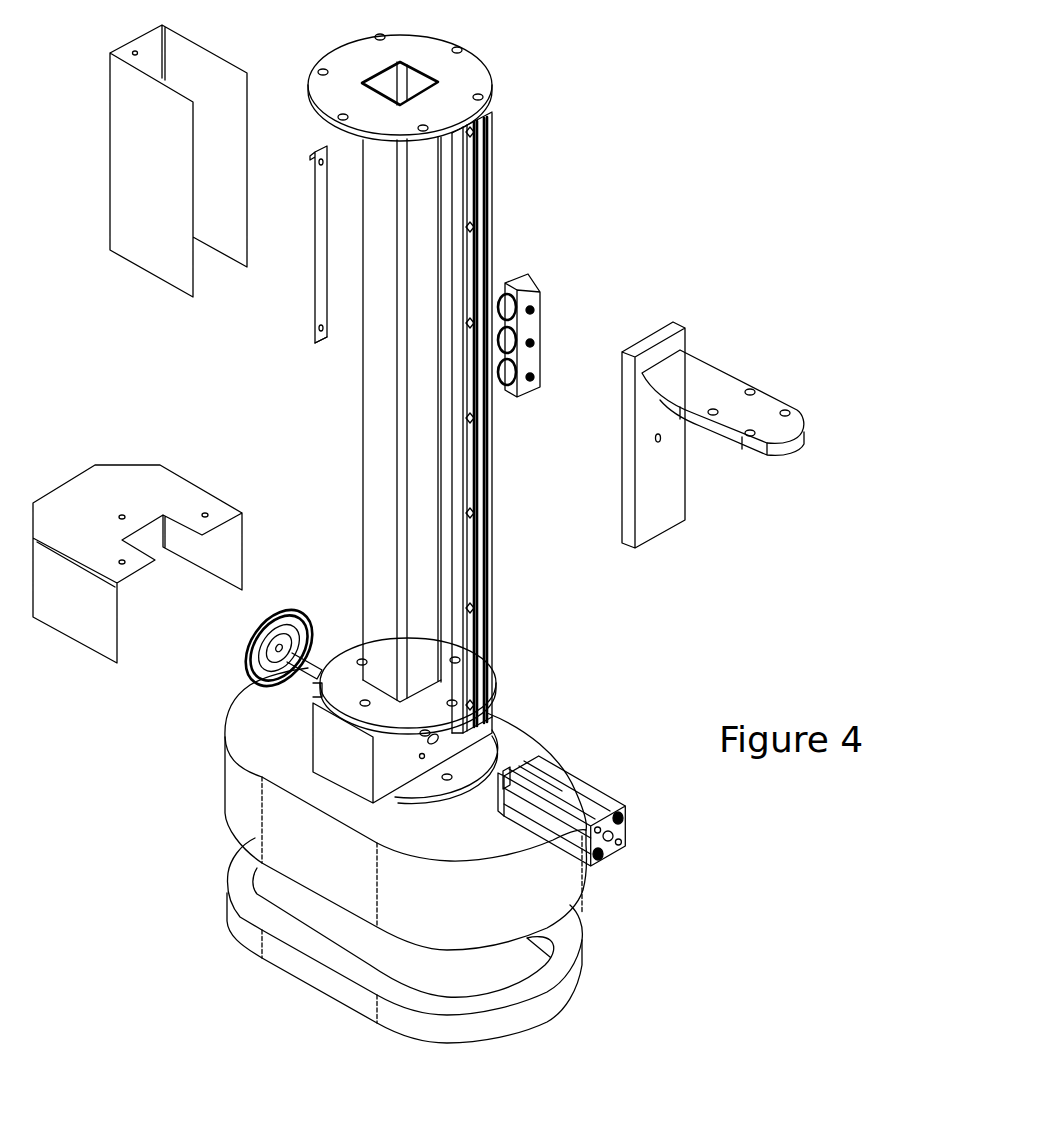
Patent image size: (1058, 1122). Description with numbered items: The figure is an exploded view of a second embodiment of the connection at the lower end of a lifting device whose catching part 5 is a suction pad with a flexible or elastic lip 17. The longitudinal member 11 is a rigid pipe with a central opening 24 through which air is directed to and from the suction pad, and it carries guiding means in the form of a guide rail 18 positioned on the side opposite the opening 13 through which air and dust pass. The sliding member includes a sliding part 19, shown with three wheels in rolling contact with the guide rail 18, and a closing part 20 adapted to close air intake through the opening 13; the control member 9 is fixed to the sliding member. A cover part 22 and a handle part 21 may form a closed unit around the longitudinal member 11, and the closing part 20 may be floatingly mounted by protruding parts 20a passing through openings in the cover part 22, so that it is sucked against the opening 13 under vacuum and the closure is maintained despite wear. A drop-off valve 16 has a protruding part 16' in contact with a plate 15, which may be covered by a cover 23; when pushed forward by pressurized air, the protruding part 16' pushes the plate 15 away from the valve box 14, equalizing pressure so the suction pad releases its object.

The catching part 5 is at (406, 809).
The control member 9 is at (783, 400).
The longitudinal member 11 is at (380, 515).
The opening 13 is at (362, 270).
The valve box 14 is at (405, 721).
The plate 15 is at (250, 665).
The drop-off valve 16 is at (648, 811).
The protruding part 16' is at (216, 750).
The flexible or elastic lip 17 is at (285, 957).
The guide rail 18 is at (468, 200).
The sliding part 19 is at (540, 327).
The closing part 20 is at (318, 227).
The protruding parts 20a is at (307, 337).
The handle part 21 is at (653, 435).
The cover part 22 is at (178, 161).
The cover 23 is at (137, 564).
The central opening 24 is at (413, 80).